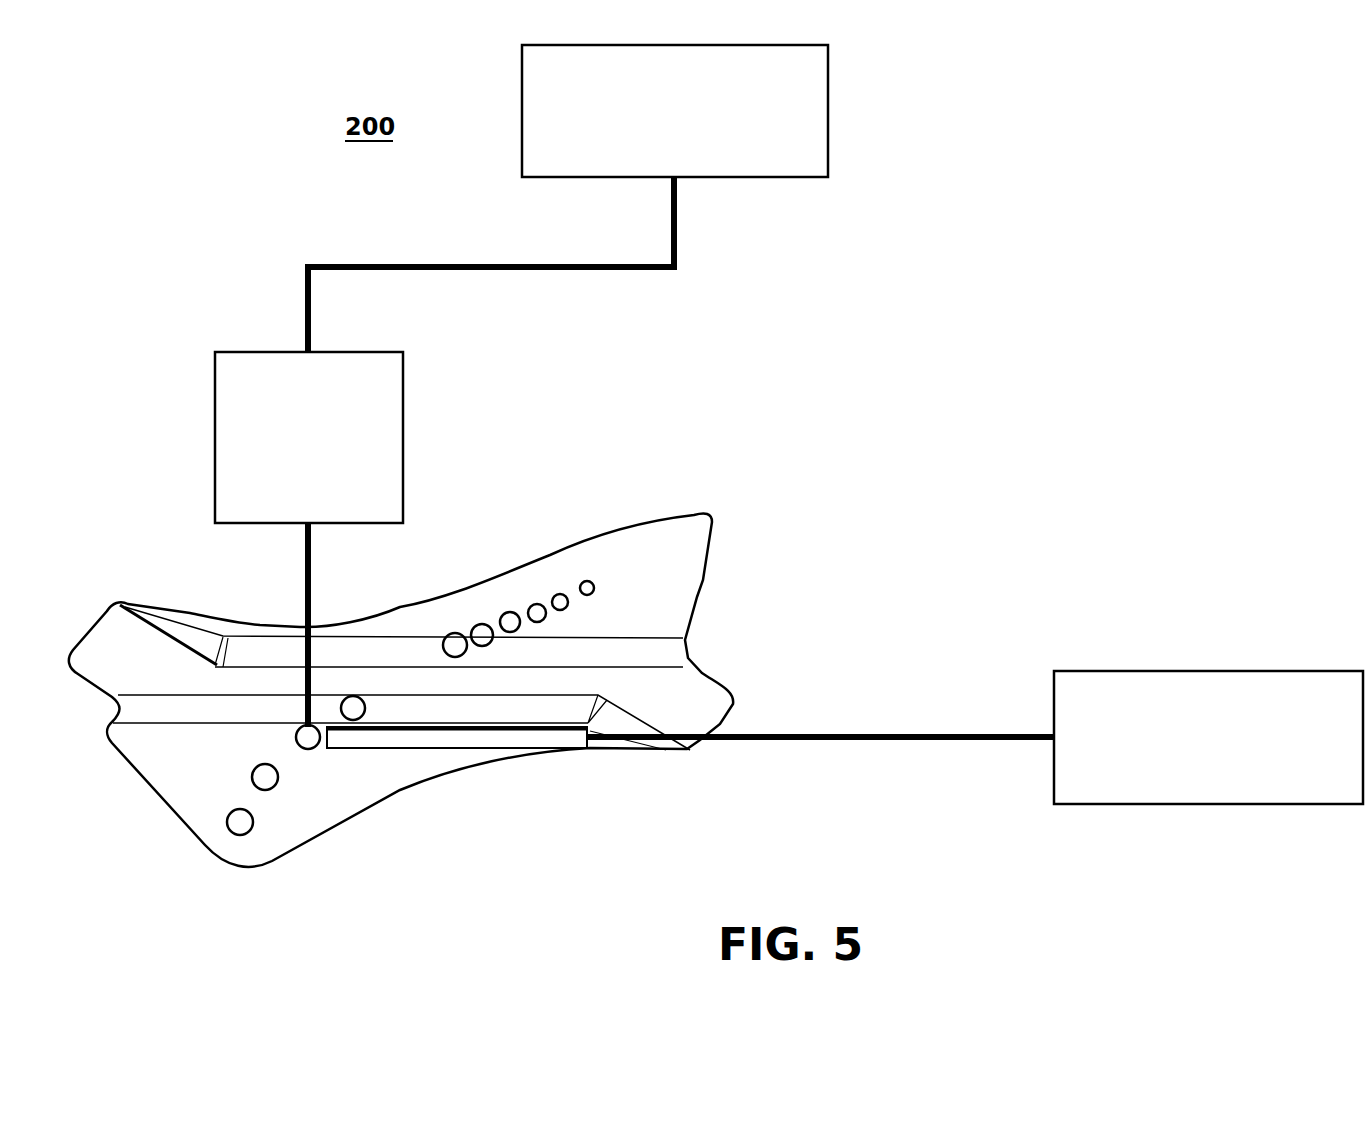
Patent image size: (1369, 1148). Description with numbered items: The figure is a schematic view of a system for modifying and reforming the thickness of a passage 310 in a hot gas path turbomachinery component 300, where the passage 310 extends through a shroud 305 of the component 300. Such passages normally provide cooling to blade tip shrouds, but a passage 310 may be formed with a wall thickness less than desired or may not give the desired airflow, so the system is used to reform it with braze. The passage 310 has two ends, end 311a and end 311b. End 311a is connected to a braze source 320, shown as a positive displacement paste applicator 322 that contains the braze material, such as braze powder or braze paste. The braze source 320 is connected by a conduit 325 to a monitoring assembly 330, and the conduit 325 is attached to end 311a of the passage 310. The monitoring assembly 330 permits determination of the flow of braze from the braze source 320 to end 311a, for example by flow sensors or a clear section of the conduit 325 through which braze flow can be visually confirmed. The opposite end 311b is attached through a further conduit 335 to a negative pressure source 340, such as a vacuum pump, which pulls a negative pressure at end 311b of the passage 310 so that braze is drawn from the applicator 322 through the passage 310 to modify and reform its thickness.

The hot gas path turbomachinery component 300 is at (423, 845).
The shroud 305 is at (138, 770).
The passage 310 is at (432, 738).
The end 311a is at (330, 735).
The end 311b is at (592, 750).
The braze source 320 is at (730, 111).
The paste applicator 322 is at (675, 127).
The conduit 325 is at (552, 270).
The monitoring assembly 330 is at (403, 430).
The further conduit 335 is at (888, 735).
The negative pressure source 340 is at (1208, 670).